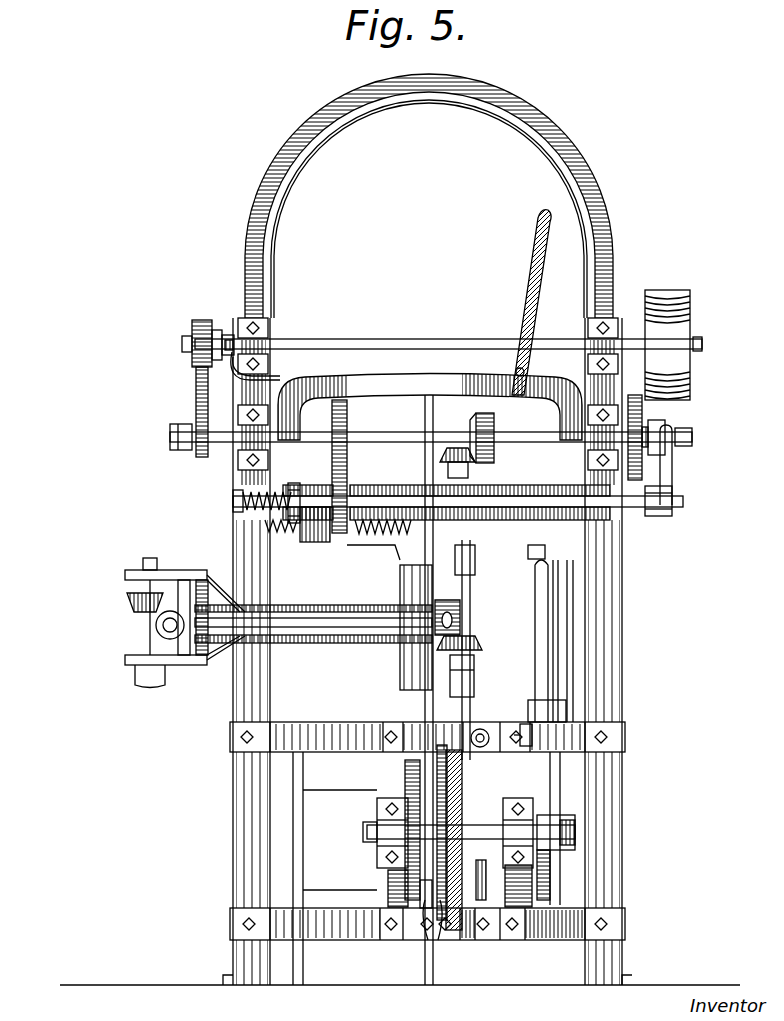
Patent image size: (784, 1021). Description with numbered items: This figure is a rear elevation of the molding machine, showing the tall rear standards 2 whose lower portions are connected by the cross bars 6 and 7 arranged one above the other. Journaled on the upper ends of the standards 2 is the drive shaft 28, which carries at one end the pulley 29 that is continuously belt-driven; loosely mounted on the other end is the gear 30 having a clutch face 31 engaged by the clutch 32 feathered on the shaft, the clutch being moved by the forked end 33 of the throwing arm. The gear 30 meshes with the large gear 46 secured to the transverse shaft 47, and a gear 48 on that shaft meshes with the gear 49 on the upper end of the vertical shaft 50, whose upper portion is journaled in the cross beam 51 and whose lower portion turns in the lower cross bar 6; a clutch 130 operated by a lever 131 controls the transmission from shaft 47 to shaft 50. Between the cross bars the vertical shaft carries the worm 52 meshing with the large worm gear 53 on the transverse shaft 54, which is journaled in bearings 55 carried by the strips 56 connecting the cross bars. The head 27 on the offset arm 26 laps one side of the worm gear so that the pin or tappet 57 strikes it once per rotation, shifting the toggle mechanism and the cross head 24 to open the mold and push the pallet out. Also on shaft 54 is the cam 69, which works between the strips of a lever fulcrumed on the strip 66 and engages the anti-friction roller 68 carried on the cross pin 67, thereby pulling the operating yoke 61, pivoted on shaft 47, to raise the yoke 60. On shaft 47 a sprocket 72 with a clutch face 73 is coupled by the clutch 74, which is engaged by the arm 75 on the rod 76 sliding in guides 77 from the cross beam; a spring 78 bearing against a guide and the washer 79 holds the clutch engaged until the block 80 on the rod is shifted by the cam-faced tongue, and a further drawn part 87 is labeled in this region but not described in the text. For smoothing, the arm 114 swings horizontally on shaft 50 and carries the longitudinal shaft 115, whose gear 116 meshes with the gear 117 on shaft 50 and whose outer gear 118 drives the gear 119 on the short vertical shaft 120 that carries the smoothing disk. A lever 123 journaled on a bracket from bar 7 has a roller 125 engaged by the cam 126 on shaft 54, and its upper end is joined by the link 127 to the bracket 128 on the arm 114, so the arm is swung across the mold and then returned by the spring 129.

The rear standards 2 is at (247, 698).
The lower cross bar 6 is at (290, 925).
The upper cross bar 7 is at (232, 738).
The cross head 24 is at (528, 722).
The arm 26 is at (438, 745).
The adjustable head 27 is at (490, 742).
The drive shaft 28 is at (362, 338).
The pulley 29 is at (672, 300).
The gear 30 is at (196, 322).
The clutch face 31 is at (215, 330).
The clutch 32 is at (240, 318).
The forked end 33 is at (268, 378).
The large gear 46 is at (196, 388).
The transverse shaft 47 is at (170, 433).
The gear 48 is at (460, 425).
The gear 49 is at (425, 445).
The vertical shaft 50 is at (470, 534).
The cross beam 51 is at (385, 490).
The worm 52 is at (475, 800).
The worm gear 53 is at (463, 913).
The transverse shaft 54 is at (367, 830).
The bearings 55 is at (387, 838).
The strips 56 is at (518, 885).
The pin or tappet 57 is at (483, 937).
The yoke 60 is at (606, 206).
The operating yoke 61 is at (405, 378).
The strip 66 is at (420, 915).
The cross pin 67 is at (405, 872).
The anti-friction roller 68 is at (427, 938).
The cam 69 is at (410, 757).
The sprocket 72 is at (643, 412).
The clutch face 73 is at (647, 454).
The clutch 74 is at (665, 424).
The arm 75 is at (668, 482).
The rod 76 is at (633, 513).
The guides 77 is at (317, 472).
The spring 78 is at (262, 520).
The washer 79 is at (235, 508).
The block 80 is at (348, 538).
The rack slide 87 is at (342, 445).
The arm 114 is at (292, 606).
The longitudinal shaft 115 is at (292, 628).
The gear 116 is at (452, 610).
The gear 117 is at (482, 645).
The gear 118 is at (156, 624).
The gear 119 is at (128, 602).
The short vertical shaft 120 is at (142, 647).
The lever 123 is at (546, 657).
The anti-friction roller 125 is at (575, 848).
The cam 126 is at (550, 876).
The link 127 is at (517, 560).
The bracket 128 is at (470, 566).
The spring 129 is at (383, 540).
The clutch 130 is at (492, 447).
The lever 131 is at (527, 262).